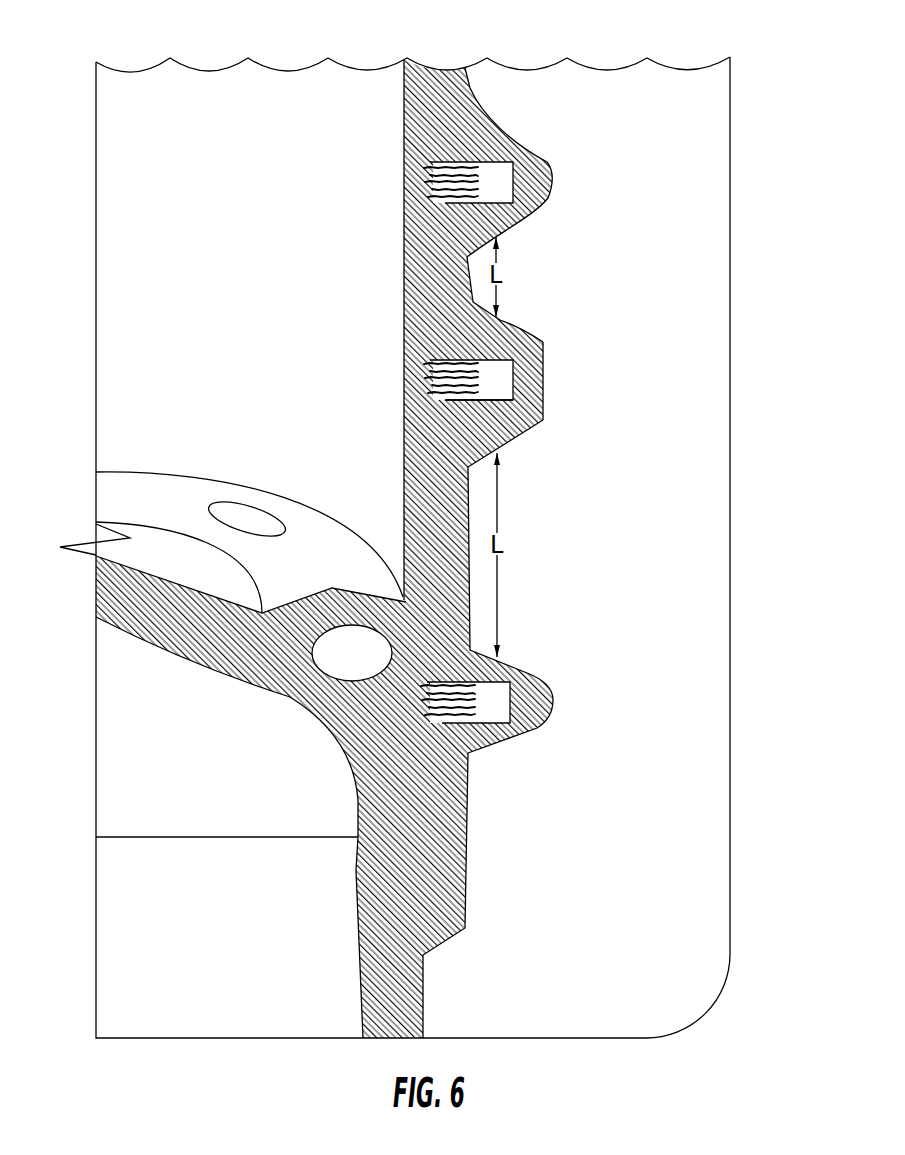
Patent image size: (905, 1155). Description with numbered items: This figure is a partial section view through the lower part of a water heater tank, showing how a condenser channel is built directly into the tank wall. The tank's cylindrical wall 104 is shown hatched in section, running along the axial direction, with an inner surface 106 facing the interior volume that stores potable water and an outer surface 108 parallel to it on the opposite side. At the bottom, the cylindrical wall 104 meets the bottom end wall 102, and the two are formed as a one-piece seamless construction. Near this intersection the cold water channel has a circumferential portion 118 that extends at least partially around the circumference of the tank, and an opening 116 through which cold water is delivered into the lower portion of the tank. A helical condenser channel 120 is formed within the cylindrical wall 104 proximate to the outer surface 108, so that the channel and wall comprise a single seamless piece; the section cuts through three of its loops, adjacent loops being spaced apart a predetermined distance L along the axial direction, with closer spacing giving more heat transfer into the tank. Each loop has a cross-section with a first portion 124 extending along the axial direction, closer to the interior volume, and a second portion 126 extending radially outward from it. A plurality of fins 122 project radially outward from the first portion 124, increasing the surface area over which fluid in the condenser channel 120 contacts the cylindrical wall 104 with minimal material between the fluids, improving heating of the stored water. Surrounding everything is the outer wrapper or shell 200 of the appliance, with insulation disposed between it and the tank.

The bottom end wall 102 is at (160, 622).
The cylindrical wall 104 is at (433, 87).
The inner surface 106 is at (203, 194).
The outer surface 108 is at (468, 832).
The opening 116 is at (243, 515).
The circumferential portion 118 is at (347, 658).
The condenser channel 120 is at (500, 172).
The fins 122 is at (453, 167).
The first portion 124 is at (438, 403).
The second portion 126 is at (505, 357).
The shell 200 is at (730, 297).